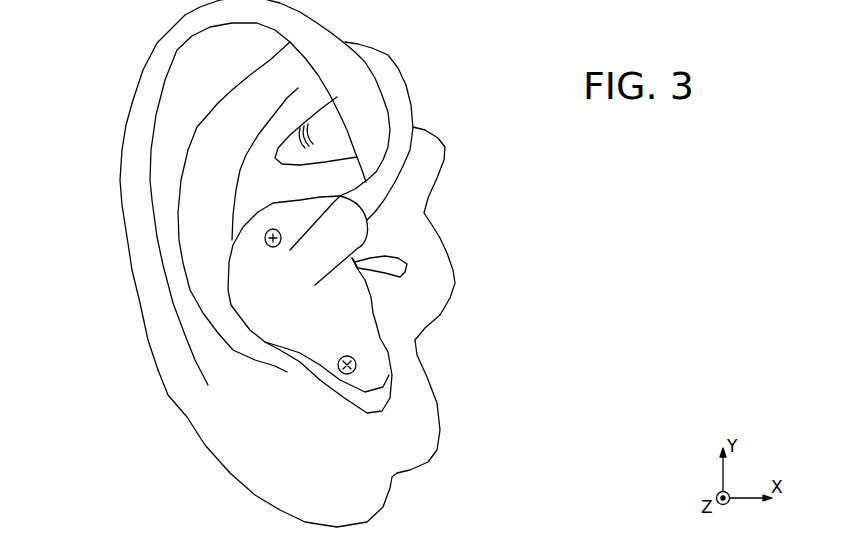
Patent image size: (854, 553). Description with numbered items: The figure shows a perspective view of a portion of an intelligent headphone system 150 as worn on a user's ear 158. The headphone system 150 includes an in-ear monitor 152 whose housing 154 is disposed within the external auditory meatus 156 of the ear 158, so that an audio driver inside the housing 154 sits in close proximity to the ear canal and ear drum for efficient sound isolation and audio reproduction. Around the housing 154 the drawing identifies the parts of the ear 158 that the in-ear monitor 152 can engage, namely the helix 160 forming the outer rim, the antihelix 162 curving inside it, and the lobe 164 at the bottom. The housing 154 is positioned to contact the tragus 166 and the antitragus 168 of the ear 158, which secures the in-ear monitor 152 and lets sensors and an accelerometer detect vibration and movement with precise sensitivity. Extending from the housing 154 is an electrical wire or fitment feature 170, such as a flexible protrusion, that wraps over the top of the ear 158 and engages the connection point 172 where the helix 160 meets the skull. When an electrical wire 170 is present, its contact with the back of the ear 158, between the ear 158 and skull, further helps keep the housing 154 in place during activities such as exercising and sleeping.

The headphone system 150 is at (71, 40).
The in-ear monitor 152 is at (294, 345).
The housing 154 is at (332, 326).
The external auditory meatus 156 is at (404, 266).
The ear 158 is at (186, 418).
The helix 160 is at (138, 116).
The antihelix 162 is at (217, 123).
The lobe 164 is at (337, 501).
The tragus 166 is at (400, 338).
The antitragus 168 is at (303, 387).
The electrical wire or fitment feature 170 is at (388, 55).
The connection point 172 is at (428, 125).